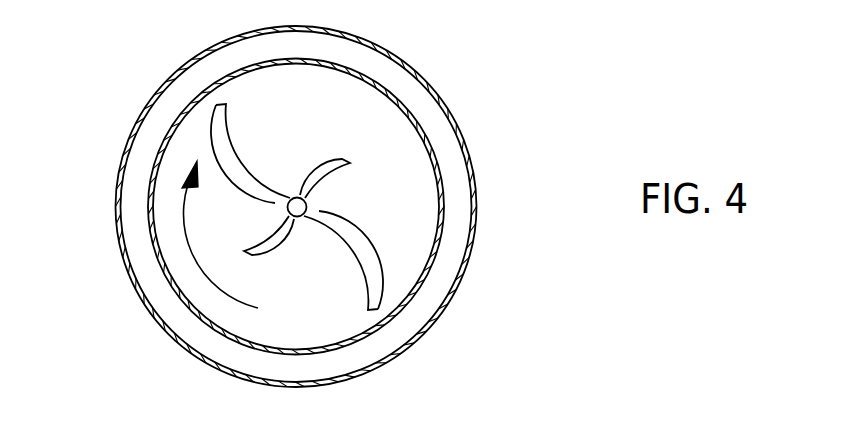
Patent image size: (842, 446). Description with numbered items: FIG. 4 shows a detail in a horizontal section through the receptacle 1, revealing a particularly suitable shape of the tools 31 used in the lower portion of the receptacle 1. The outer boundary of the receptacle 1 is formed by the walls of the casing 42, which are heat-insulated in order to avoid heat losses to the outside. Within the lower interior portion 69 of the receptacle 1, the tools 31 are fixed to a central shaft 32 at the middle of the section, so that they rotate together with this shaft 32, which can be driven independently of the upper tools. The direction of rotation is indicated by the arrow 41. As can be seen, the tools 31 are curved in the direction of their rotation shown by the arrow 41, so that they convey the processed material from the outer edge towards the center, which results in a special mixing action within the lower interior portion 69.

The receptacle 1 is at (442, 83).
The casing 42 is at (150, 198).
The tools 31 is at (223, 147).
The central shaft 32 is at (300, 207).
The arrow 41 is at (195, 247).
The lower interior portion 69 is at (333, 310).